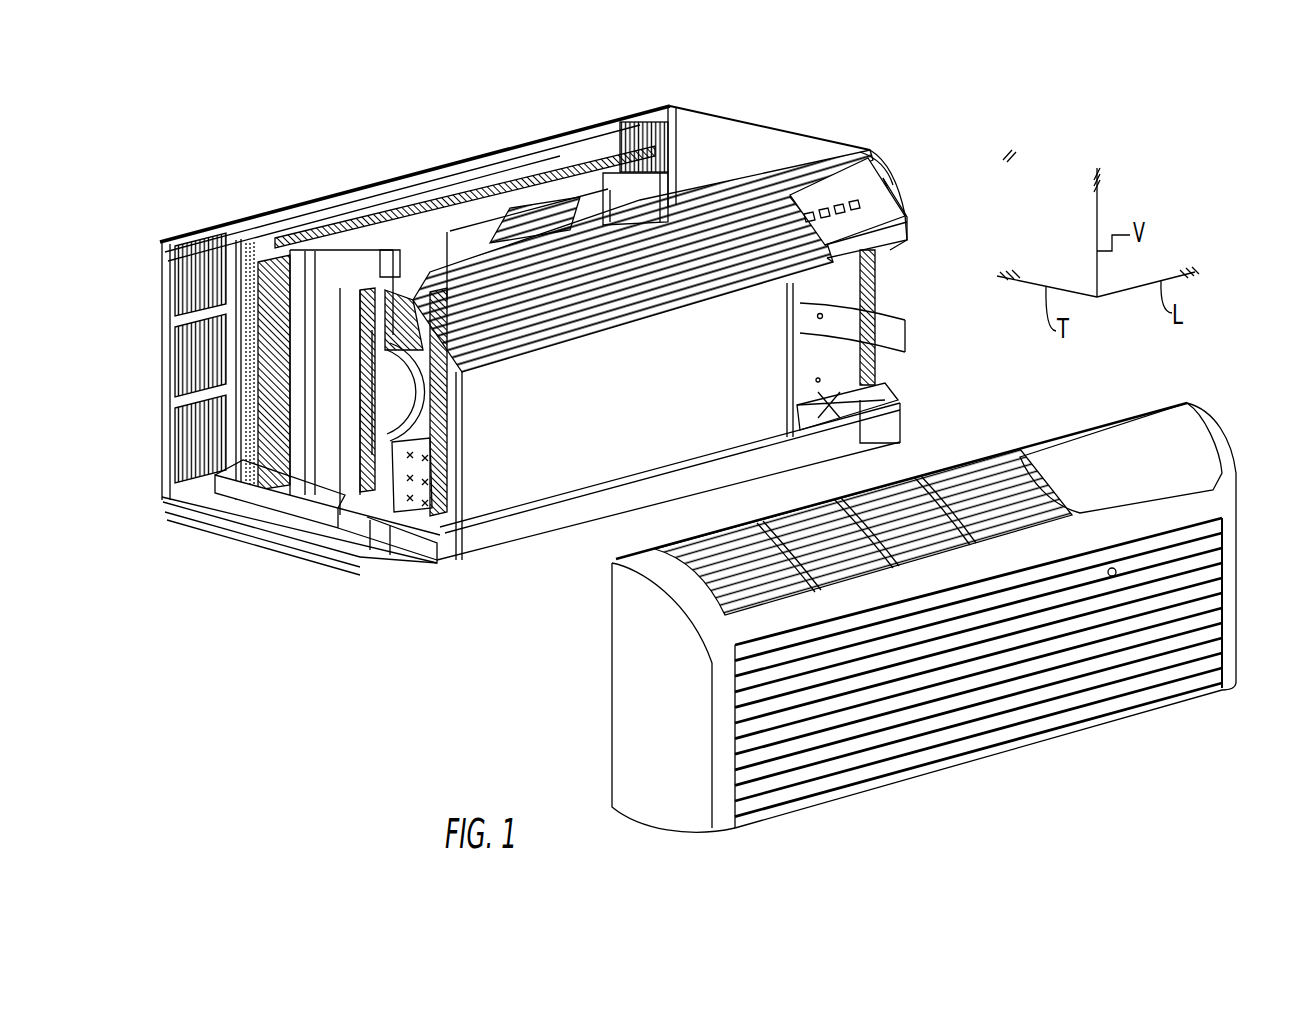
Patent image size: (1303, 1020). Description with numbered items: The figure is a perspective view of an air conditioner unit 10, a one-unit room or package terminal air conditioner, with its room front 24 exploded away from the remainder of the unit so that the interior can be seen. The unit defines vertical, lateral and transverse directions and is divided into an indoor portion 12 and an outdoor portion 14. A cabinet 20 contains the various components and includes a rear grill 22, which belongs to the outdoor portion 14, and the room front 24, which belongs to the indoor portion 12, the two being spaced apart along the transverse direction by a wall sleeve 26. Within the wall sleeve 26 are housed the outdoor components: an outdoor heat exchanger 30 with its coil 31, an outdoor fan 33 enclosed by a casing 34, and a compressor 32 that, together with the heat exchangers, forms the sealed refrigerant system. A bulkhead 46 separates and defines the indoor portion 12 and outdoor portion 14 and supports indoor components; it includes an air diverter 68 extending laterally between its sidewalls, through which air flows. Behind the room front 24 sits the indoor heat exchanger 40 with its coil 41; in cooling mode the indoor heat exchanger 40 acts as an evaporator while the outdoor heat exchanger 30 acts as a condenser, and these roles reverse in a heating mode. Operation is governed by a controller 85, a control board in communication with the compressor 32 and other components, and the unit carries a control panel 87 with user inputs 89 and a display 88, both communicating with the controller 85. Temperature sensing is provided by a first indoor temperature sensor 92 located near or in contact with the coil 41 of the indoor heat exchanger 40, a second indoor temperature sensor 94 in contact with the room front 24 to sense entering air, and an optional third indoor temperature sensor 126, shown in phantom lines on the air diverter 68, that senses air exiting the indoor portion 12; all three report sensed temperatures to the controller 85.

The air conditioner unit 10 is at (1010, 157).
The indoor portion 12 is at (410, 567).
The outdoor portion 14 is at (262, 546).
The cabinet 20 is at (848, 132).
The rear grill 22 is at (489, 146).
The room front 24 is at (1212, 483).
The wall sleeve 26 is at (748, 142).
The outdoor heat exchanger 30 is at (250, 425).
The coil 31 is at (258, 388).
The compressor 32 is at (680, 172).
The outdoor fan 33 is at (318, 517).
The casing 34 is at (411, 234).
The indoor heat exchanger 40 is at (498, 489).
The coil 41 is at (868, 346).
The bulkhead 46 is at (333, 520).
The air diverter 68 is at (598, 340).
The controller 85 is at (906, 240).
The control panel 87 is at (898, 208).
The display 88 is at (803, 178).
The user inputs 89 is at (872, 188).
The first indoor temperature sensor 92 is at (868, 318).
The second indoor temperature sensor 94 is at (1112, 572).
The third indoor temperature sensor 126 is at (765, 288).